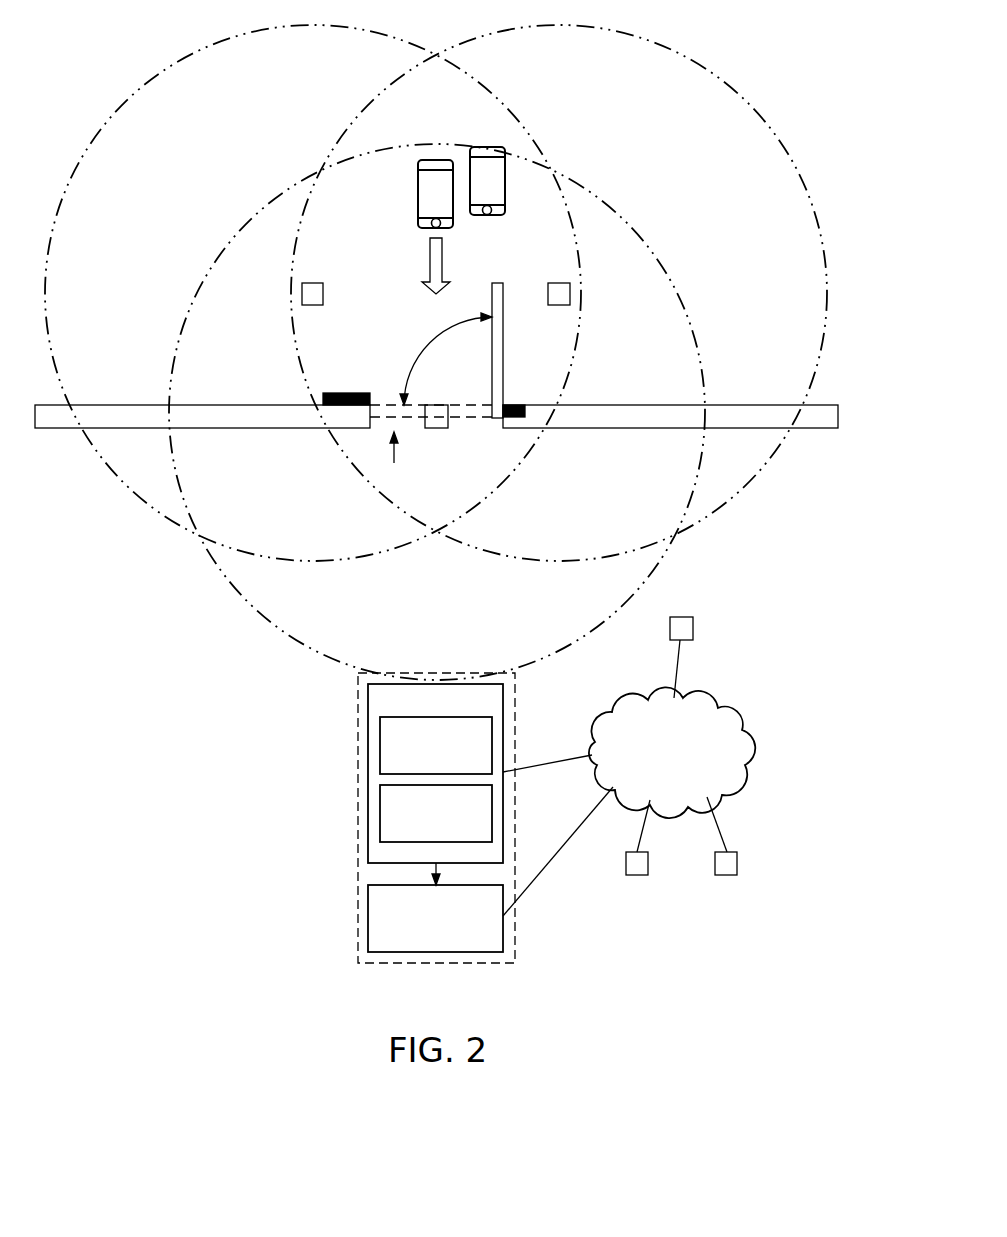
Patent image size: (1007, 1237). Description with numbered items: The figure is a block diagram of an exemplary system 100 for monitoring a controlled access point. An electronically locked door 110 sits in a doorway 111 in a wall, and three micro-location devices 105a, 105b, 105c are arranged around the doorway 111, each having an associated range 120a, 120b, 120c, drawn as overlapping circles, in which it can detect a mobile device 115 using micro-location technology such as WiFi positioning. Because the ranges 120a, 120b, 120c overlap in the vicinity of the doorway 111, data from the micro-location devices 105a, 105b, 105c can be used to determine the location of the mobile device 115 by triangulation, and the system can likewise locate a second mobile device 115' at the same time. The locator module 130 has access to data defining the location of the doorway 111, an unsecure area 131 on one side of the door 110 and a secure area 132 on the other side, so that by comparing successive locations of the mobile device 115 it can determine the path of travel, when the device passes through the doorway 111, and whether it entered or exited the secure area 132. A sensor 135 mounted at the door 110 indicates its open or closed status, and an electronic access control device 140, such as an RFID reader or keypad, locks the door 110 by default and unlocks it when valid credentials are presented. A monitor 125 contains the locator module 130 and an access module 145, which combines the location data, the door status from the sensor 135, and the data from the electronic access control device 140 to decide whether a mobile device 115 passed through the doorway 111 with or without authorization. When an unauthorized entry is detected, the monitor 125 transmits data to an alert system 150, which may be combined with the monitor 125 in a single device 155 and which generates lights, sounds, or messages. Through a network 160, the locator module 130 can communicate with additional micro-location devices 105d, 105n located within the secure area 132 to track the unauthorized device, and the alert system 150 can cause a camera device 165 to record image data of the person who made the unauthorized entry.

The system 100 is at (775, 45).
The micro-location device 105a is at (568, 305).
The micro-location device 105b is at (300, 298).
The micro-location device 105c is at (443, 430).
The additional micro-location device 105d is at (645, 875).
The additional micro-location device 105n is at (733, 875).
The electronically locked door 110 is at (511, 271).
The doorway 111 is at (394, 460).
The mobile device 115 is at (453, 197).
The mobile device 115' is at (508, 152).
The range 120a is at (783, 147).
The range 120b is at (140, 90).
The range 120c is at (243, 608).
The monitor 125 is at (389, 773).
The locator module 130 is at (380, 752).
The unsecure area 131 is at (151, 259).
The secure area 132 is at (151, 591).
The sensor 135 is at (523, 418).
The electronic access control device 140 is at (343, 392).
The access module 145 is at (380, 807).
The alert system 150 is at (368, 908).
The single device 155 is at (358, 853).
The network 160 is at (745, 737).
The camera device 165 is at (695, 625).